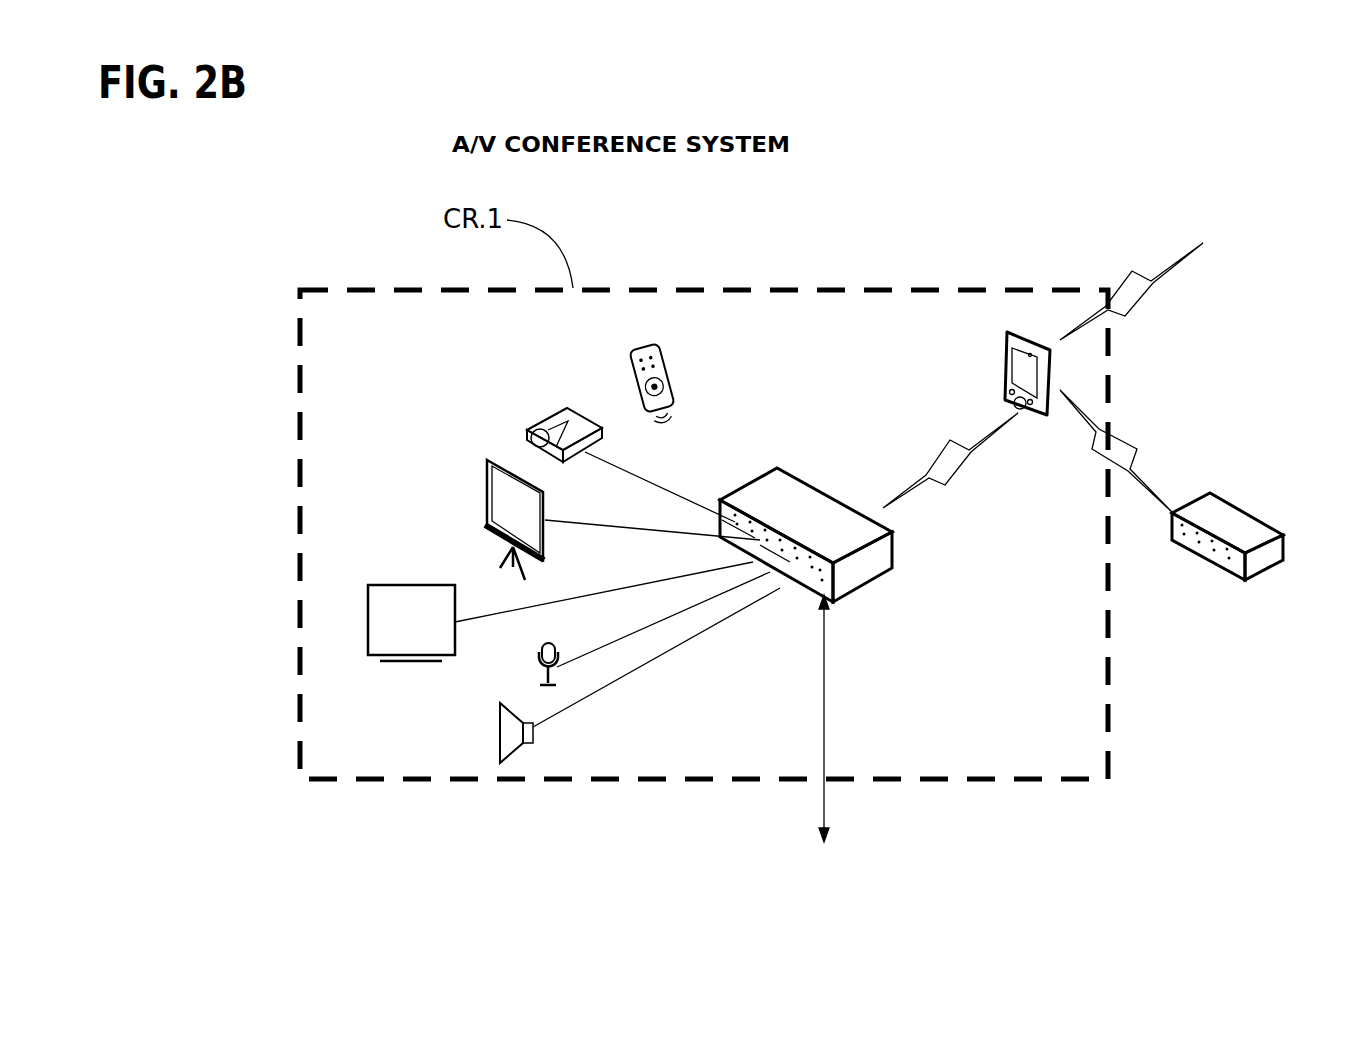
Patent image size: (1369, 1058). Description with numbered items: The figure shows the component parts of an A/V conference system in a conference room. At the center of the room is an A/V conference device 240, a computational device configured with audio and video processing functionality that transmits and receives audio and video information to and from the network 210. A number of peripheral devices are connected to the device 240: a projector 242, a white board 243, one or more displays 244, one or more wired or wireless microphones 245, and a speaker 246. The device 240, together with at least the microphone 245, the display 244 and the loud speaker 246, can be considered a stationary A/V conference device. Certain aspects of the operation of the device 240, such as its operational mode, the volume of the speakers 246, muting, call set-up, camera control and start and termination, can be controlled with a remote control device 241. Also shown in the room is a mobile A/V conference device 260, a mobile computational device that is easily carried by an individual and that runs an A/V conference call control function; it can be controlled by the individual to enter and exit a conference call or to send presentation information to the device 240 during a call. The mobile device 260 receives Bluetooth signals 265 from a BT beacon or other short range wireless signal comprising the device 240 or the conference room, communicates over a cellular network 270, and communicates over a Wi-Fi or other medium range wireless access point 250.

The A/V conference device 240 is at (887, 572).
The remote control device 241 is at (667, 375).
The projector 242 is at (565, 407).
The white board 243 is at (487, 483).
The display 244 is at (418, 583).
The microphone 245 is at (542, 667).
The speaker 246 is at (500, 748).
The network 210 is at (806, 742).
The Wi-Fi access point 250 is at (1263, 520).
The mobile A/V conference device 260 is at (1005, 373).
The Bluetooth signals 265 is at (993, 438).
The cellular network 270 is at (1200, 263).